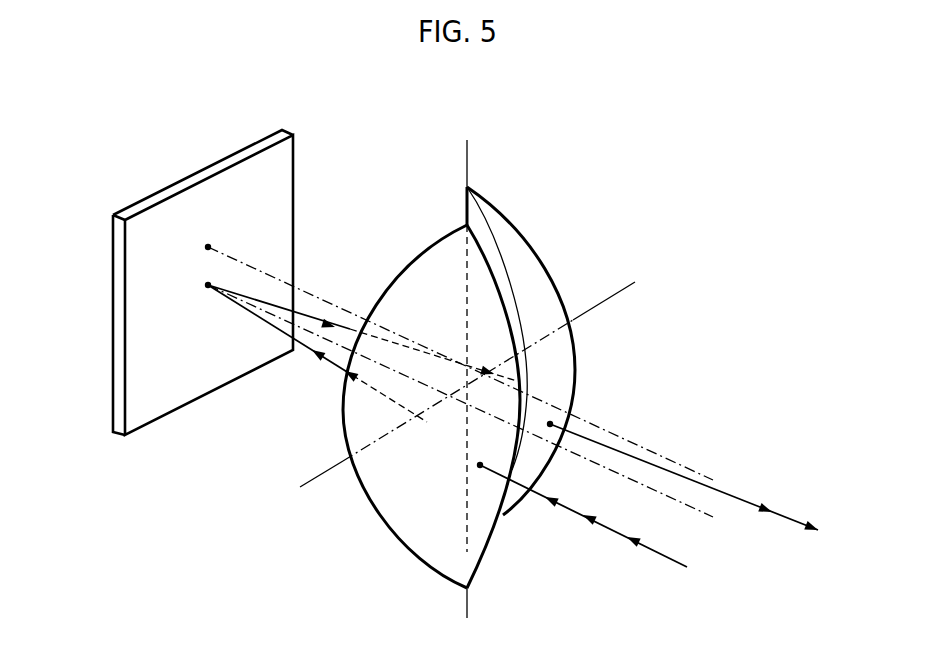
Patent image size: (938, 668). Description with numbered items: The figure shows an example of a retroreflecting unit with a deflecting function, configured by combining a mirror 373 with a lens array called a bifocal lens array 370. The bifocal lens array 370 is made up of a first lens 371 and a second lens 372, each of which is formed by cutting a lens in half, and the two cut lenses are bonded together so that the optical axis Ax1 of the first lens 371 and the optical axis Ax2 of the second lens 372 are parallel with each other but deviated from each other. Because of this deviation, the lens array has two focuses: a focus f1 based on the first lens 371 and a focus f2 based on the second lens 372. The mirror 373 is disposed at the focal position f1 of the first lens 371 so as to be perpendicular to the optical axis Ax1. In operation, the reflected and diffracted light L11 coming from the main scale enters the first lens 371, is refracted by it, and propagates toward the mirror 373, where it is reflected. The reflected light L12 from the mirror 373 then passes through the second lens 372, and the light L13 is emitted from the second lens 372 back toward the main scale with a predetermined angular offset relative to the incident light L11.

The bifocal lens array 370 is at (466, 348).
The first lens 371 is at (383, 502).
The second lens 372 is at (522, 257).
The mirror 373 is at (270, 170).
The optical axis of the first lens Ax1 is at (687, 507).
The optical axis of the second lens Ax2 is at (615, 432).
The incident light L11 is at (653, 552).
The reflected light from the mirror L12 is at (317, 318).
The emitted light L13 is at (737, 490).
The focus of the first lens f1 is at (208, 285).
The focus of the second lens f2 is at (208, 247).